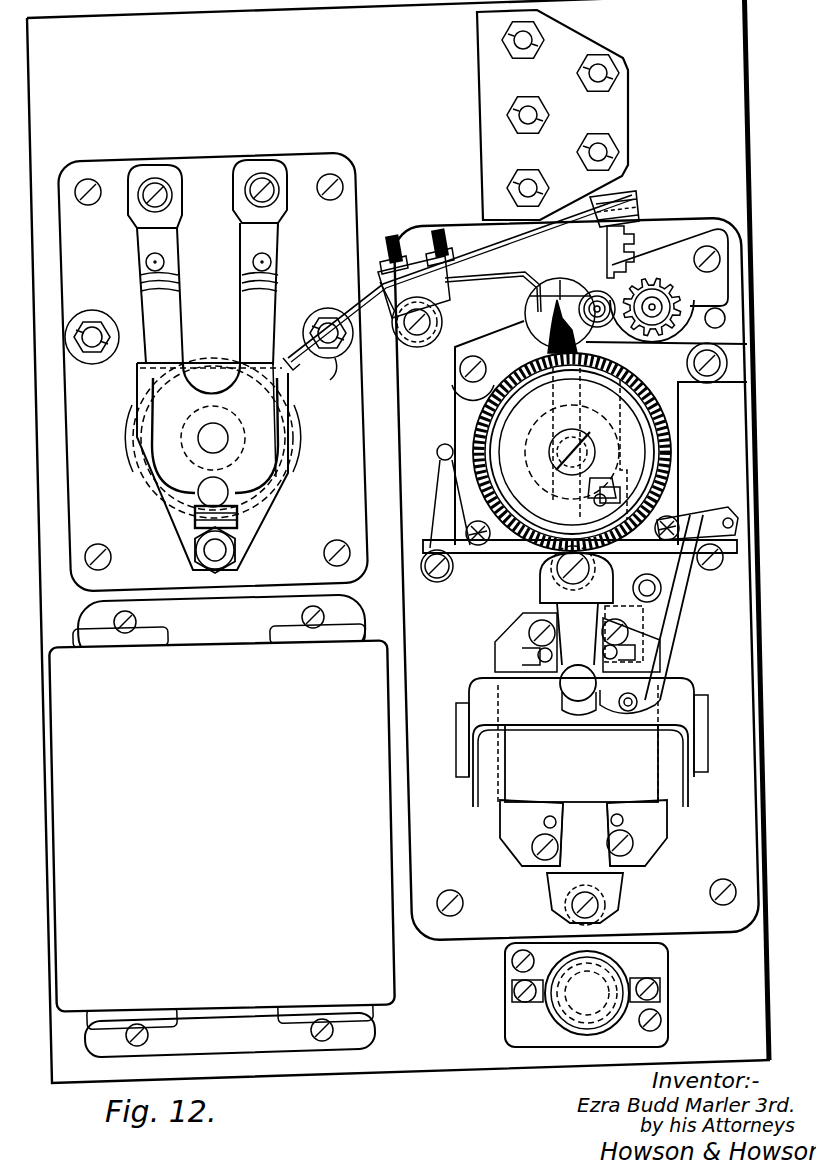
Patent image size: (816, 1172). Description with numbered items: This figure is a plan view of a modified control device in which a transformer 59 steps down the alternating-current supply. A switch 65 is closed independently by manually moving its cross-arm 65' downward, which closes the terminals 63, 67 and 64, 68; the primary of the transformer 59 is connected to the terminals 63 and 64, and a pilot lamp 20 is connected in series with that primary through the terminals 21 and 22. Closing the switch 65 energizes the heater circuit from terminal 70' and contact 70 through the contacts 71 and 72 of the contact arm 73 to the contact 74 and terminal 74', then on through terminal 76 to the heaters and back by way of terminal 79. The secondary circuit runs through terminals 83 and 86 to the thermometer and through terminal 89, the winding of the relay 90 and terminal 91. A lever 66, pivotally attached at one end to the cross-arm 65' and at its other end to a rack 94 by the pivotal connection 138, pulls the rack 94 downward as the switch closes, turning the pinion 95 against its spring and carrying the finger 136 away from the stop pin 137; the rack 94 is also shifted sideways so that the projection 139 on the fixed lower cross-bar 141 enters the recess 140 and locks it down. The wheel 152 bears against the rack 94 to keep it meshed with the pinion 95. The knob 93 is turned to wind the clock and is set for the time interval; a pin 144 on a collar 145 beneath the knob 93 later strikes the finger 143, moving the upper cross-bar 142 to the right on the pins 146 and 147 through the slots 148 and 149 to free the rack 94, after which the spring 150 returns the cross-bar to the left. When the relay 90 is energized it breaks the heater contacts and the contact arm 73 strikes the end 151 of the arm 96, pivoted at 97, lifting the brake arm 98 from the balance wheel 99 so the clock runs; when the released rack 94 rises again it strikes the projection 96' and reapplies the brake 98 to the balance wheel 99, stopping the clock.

The pilot lamp 20 is at (606, 968).
The terminal 21 is at (516, 993).
The terminal 22 is at (661, 993).
The transformer 59 is at (222, 826).
The terminal 63 is at (530, 628).
The terminal 64 is at (630, 632).
The switch 65 is at (581, 747).
The cross-arm 65' is at (577, 728).
The lever 66 is at (664, 610).
The terminal 67 is at (530, 853).
The terminal 68 is at (634, 846).
The contact 70 is at (130, 263).
The terminal 70' is at (155, 185).
The contact 71 is at (181, 294).
The contact 72 is at (283, 280).
The contact arm 73 is at (272, 308).
The contact 74 is at (287, 247).
The terminal 74' is at (261, 178).
The terminal 76 is at (513, 182).
The terminal 79 is at (612, 152).
The terminal 83 is at (622, 84).
The terminal 86 is at (510, 50).
The terminal 89 is at (66, 338).
The relay 90 is at (296, 437).
The terminal 91 is at (344, 352).
The knob 93 is at (490, 436).
The rack 94 is at (605, 274).
The pinion 95 is at (718, 287).
The arm 96 is at (379, 304).
The projection 96' is at (487, 276).
The pivot 97 is at (425, 242).
The brake arm 98 is at (492, 274).
The balance wheel 99 is at (526, 312).
The finger 136 is at (742, 236).
The stop pin 137 is at (727, 321).
The pivotal connection 138 is at (662, 588).
The projection 139 is at (618, 496).
The recess 140 is at (655, 414).
The lower cross-bar 141 is at (700, 512).
The upper cross-bar 142 is at (700, 512).
The finger 143 is at (590, 500).
The pin 144 is at (572, 482).
The collar 145 is at (536, 435).
The pin 146 is at (725, 527).
The pin 147 is at (486, 550).
The slot 148 is at (660, 535).
The slot 149 is at (438, 582).
The spring 150 is at (428, 488).
The end of arm 151 is at (294, 368).
The wheel 152 is at (612, 288).